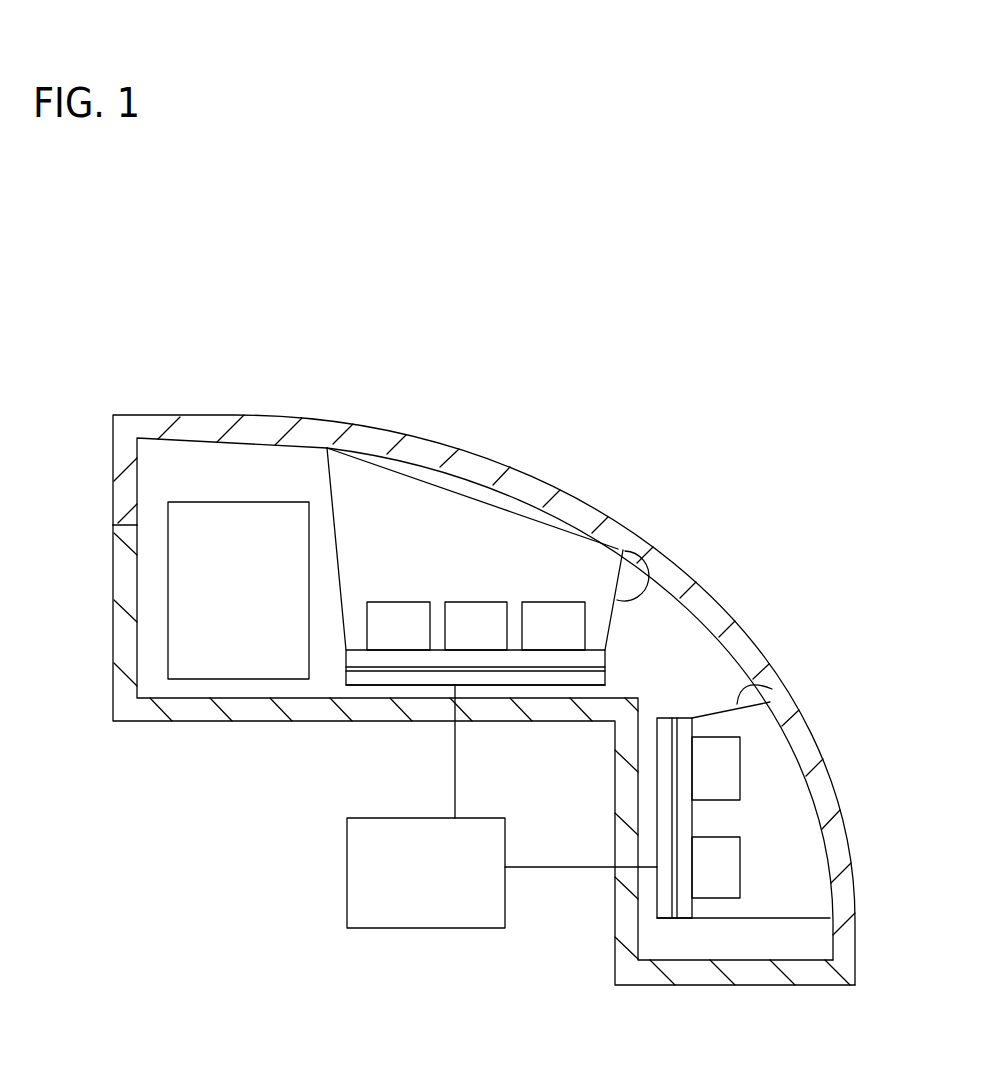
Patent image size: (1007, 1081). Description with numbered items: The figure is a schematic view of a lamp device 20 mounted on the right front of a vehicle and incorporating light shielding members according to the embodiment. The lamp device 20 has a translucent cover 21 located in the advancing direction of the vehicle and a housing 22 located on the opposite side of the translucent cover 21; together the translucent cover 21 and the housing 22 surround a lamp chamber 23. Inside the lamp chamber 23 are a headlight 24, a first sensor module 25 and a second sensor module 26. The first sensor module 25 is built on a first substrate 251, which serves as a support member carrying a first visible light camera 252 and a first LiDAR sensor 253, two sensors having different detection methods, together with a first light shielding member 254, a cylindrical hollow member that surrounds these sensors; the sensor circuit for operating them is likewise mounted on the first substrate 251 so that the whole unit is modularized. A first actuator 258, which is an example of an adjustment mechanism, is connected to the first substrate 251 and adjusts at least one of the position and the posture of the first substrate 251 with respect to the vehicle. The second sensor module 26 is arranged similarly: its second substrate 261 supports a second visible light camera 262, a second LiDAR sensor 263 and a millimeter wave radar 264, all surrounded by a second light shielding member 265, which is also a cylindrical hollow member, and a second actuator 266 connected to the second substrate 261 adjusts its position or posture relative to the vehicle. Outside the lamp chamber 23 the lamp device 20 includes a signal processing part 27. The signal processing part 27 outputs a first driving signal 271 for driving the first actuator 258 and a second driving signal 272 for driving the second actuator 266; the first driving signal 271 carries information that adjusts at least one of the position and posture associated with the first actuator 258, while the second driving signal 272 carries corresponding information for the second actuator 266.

The lamp device 20 is at (122, 361).
The translucent cover 21 is at (113, 455).
The housing 22 is at (113, 630).
The lamp chamber 23 is at (237, 470).
The headlight 24 is at (230, 681).
The first sensor module 25 is at (803, 934).
The second sensor module 26 is at (416, 460).
The signal processing part 27 is at (430, 942).
The first substrate 251 is at (682, 908).
The first visible light camera 252 is at (740, 863).
The first LiDAR sensor 253 is at (740, 763).
The first light shielding member 254 is at (748, 697).
The first actuator 258 is at (665, 910).
The second substrate 261 is at (360, 672).
The second visible light camera 262 is at (395, 602).
The second LiDAR sensor 263 is at (477, 602).
The millimeter wave radar 264 is at (557, 602).
The second light shielding member 265 is at (653, 577).
The second actuator 266 is at (403, 677).
The first driving signal 271 is at (558, 867).
The second driving signal 272 is at (455, 768).